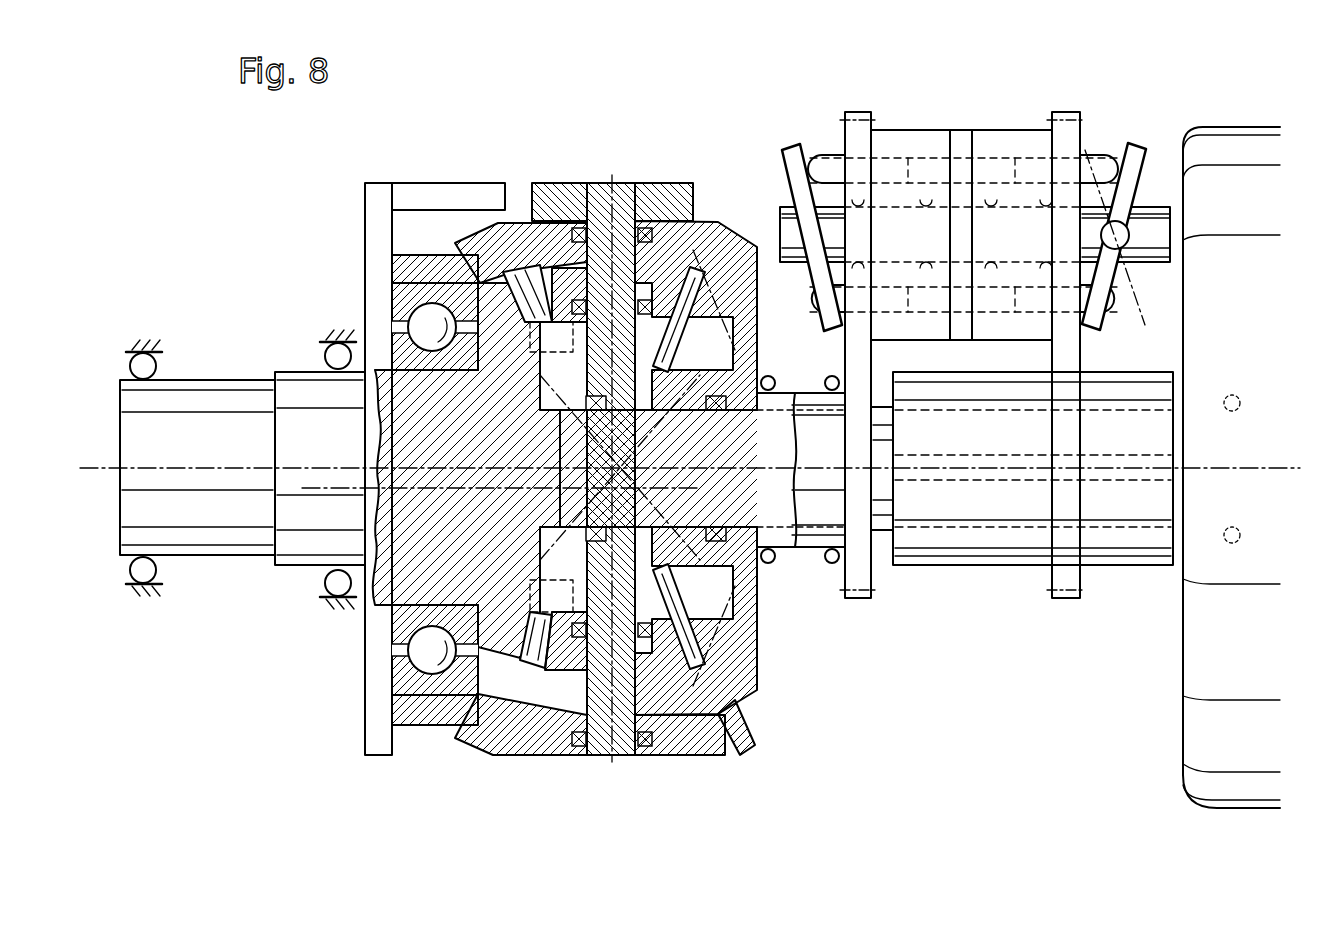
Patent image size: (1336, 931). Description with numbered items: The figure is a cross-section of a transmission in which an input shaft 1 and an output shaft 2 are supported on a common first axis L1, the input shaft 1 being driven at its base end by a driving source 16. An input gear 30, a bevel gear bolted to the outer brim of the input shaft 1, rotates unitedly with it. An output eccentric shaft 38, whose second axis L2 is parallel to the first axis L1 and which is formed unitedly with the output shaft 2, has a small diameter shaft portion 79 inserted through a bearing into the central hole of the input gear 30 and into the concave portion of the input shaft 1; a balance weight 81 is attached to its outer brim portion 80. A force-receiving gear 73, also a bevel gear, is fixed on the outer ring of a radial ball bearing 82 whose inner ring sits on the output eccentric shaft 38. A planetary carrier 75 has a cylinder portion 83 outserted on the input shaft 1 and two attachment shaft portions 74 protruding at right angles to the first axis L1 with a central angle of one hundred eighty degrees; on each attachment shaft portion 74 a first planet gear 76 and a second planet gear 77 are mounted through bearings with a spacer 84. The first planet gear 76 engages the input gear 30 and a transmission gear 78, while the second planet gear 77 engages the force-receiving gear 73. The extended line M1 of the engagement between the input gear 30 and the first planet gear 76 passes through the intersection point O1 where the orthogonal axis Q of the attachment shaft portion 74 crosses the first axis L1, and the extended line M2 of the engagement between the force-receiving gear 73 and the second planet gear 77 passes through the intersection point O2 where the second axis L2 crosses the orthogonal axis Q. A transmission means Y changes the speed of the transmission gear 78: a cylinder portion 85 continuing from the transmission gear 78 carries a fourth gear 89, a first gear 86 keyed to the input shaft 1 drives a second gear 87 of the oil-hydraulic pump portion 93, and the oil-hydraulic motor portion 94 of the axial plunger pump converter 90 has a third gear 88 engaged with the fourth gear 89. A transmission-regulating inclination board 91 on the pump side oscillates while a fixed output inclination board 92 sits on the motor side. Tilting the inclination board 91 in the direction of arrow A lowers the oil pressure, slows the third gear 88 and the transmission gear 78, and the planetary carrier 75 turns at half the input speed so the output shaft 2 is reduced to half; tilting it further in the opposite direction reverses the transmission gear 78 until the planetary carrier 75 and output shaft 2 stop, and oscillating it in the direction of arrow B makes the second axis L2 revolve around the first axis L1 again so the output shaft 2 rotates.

The input shaft 1 is at (802, 565).
The output shaft 2 is at (209, 378).
The driving source 16 is at (1186, 738).
The input gear 30 is at (452, 722).
The output eccentric shaft 38 is at (420, 622).
The force-receiving gear 73 is at (462, 237).
The attachment shaft portion 74 is at (618, 192).
The planetary carrier 75 is at (692, 362).
The first planet gear 76 is at (563, 238).
The second planet gear 77 is at (517, 236).
The transmission gear 78 is at (752, 655).
The small diameter shaft portion 79 is at (538, 450).
The outer brim portion 80 is at (366, 250).
The balance weight 81 is at (482, 192).
The radial ball bearing 82 is at (410, 722).
The cylinder portion 83 is at (683, 568).
The spacer 84 is at (680, 742).
The cylinder portion 85 is at (830, 562).
The first gear 86 is at (1064, 602).
The second gear 87 is at (1066, 114).
The third gear 88 is at (858, 112).
The fourth gear 89 is at (866, 602).
The axial plunger pump converter 90 is at (962, 112).
The transmission-regulating inclination board 91 is at (1140, 150).
The fixed output inclination board 92 is at (795, 160).
The oil-hydraulic pump portion 93 is at (1010, 130).
The oil-hydraulic motor portion 94 is at (913, 130).
The orthogonal axis Q is at (620, 212).
The transmission means Y is at (1127, 126).
The arrow A is at (1100, 348).
The arrow B is at (1155, 343).
The first axis L1 is at (200, 475).
The second axis L2 is at (330, 490).
The extended line M1 is at (660, 424).
The extended line M2 is at (613, 505).
The intersection point O1 is at (613, 466).
The intersection point O2 is at (613, 470).